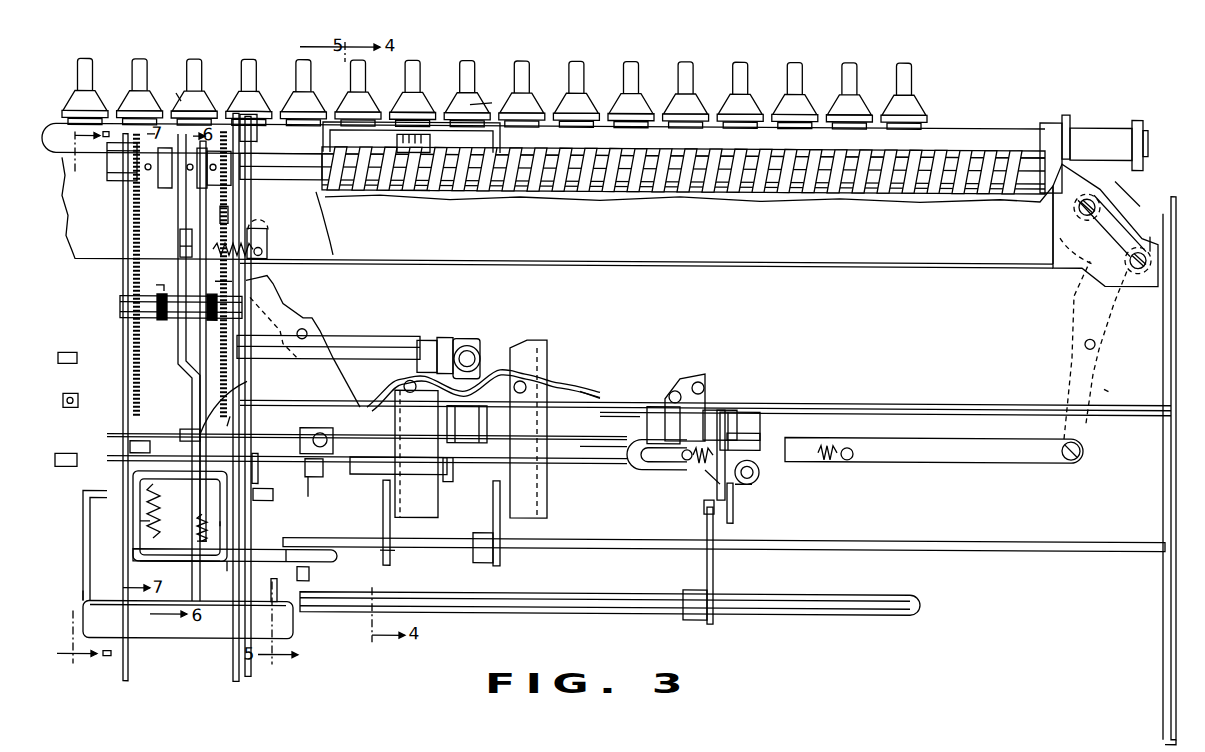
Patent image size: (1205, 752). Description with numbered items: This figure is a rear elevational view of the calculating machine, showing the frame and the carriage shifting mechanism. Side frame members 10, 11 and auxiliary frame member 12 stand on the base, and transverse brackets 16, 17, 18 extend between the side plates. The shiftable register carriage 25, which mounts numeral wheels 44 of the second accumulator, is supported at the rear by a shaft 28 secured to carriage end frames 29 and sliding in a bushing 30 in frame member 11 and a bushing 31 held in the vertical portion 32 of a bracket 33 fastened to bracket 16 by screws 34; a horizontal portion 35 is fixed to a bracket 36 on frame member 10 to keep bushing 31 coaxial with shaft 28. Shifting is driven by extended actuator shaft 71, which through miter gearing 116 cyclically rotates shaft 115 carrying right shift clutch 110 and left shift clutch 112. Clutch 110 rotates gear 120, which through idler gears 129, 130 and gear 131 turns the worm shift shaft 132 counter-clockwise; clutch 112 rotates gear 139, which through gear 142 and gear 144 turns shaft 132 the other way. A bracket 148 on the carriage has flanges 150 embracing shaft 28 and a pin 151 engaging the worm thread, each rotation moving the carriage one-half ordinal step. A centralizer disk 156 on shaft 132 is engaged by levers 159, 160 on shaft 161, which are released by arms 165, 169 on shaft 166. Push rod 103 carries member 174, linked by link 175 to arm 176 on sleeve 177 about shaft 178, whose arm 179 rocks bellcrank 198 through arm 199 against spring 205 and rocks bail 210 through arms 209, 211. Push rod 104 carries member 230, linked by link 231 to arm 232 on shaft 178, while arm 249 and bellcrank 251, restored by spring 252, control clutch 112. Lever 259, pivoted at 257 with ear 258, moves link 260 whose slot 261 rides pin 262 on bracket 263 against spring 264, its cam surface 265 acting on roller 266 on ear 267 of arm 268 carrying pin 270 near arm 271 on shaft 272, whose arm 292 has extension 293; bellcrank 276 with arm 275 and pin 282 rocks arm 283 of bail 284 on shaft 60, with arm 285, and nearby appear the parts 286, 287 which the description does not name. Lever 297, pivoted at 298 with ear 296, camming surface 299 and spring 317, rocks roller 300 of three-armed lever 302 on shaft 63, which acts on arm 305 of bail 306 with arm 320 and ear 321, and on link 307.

The side frame member 10 is at (1171, 488).
The side frame member 11 is at (241, 335).
The auxiliary frame member 12 is at (124, 292).
The rear transverse bracket 16 is at (605, 257).
The transverse bracket 17 is at (675, 333).
The transverse bracket 18 is at (620, 404).
The shiftable register carriage 25 is at (936, 118).
The shaft 28 is at (989, 126).
The carriage end frame 29 is at (1140, 195).
The bushing 30 is at (244, 120).
The bushing 31 is at (1050, 116).
The vertical portion of bracket 32 is at (1069, 121).
The bracket 33 is at (1076, 160).
The screws 34 is at (1110, 215).
The horizontal portion of bracket 35 is at (1150, 236).
The bracket 36 is at (1098, 262).
The numeral wheels of second accumulator 44 is at (485, 104).
The transverse rockable shaft 60 is at (658, 404).
The transverse rockable shaft 63 is at (600, 458).
The extended actuator shaft 71 is at (478, 352).
The push rod 103 is at (422, 340).
The push rod 104 is at (552, 380).
The right shift clutch 110 is at (206, 286).
The left shift clutch 112 is at (160, 286).
The shaft 115 is at (392, 352).
The miter gearing 116 is at (446, 336).
The 32-tooth gear 120 is at (220, 322).
The 16-tooth idler gear 129 is at (222, 283).
The 16-tooth idler gear 130 is at (222, 212).
The 16-tooth gear 131 is at (225, 157).
The worm shift shaft 132 is at (711, 156).
The 32-tooth gear 139 is at (134, 337).
The 32-tooth gear 142 is at (132, 248).
The 16-tooth gear 144 is at (122, 180).
The bracket 148 is at (420, 130).
The flanges 150 is at (322, 135).
The pin 151 is at (412, 185).
The centralizer disk 156 is at (181, 96).
The lever 159 is at (180, 236).
The lever 160 is at (180, 250).
The shaft 161 is at (155, 320).
The arm 165 is at (180, 402).
The shaft 166 is at (163, 482).
The arm 169 is at (196, 524).
The depending angle-shaped member 174 is at (430, 503).
The link 175 is at (392, 515).
The arm 176 is at (392, 558).
The sleeve 177 is at (340, 560).
The shaft 178 is at (572, 550).
The arm 179 is at (230, 567).
The bellcrank 198 is at (240, 392).
The arm 199 is at (230, 415).
The spring 205 is at (198, 529).
The arm of bail 209 is at (225, 522).
The bail 210 is at (144, 583).
The arm of bail 211 is at (133, 513).
The depending member 230 is at (545, 497).
The link 231 is at (502, 515).
The arm 232 is at (496, 563).
The arm 249 is at (130, 445).
The bellcrank 251 is at (180, 432).
The spring 252 is at (147, 527).
The pivot 257 is at (1096, 338).
The ear 258 is at (1128, 182).
The lever 259 is at (1098, 350).
The link 260 is at (991, 458).
The elongated slot 261 is at (655, 468).
The pin 262 is at (689, 458).
The depending bracket 263 is at (705, 398).
The spring 264 is at (846, 443).
The cam surface 265 is at (710, 470).
The roller 266 is at (760, 472).
The ear 267 is at (750, 482).
The arm of bellcrank 268 is at (717, 520).
The pin 270 is at (705, 505).
The arm 271 is at (712, 568).
The shaft 272 is at (616, 612).
The arm of bellcrank 275 is at (735, 505).
The bellcrank 276 is at (722, 410).
The pin 282 is at (748, 420).
The arm of bail 283 is at (770, 430).
The bail 284 is at (598, 392).
The arm of bail 285 is at (456, 466).
The rod 286 is at (372, 477).
The arm 287 is at (375, 405).
The arm 292 is at (274, 600).
The lateral extension 293 is at (252, 484).
The ear 296 is at (270, 243).
The lever 297 is at (308, 315).
The pivot 298 is at (309, 333).
The camming surface 299 is at (312, 468).
The roller 300 is at (325, 491).
The three-armed lever 302 is at (305, 433).
The arm of bail 305 is at (296, 535).
The bail 306 is at (210, 638).
The link 307 is at (306, 575).
The spring 317 is at (214, 243).
The arm of bail 320 is at (83, 584).
The ear 321 is at (93, 488).